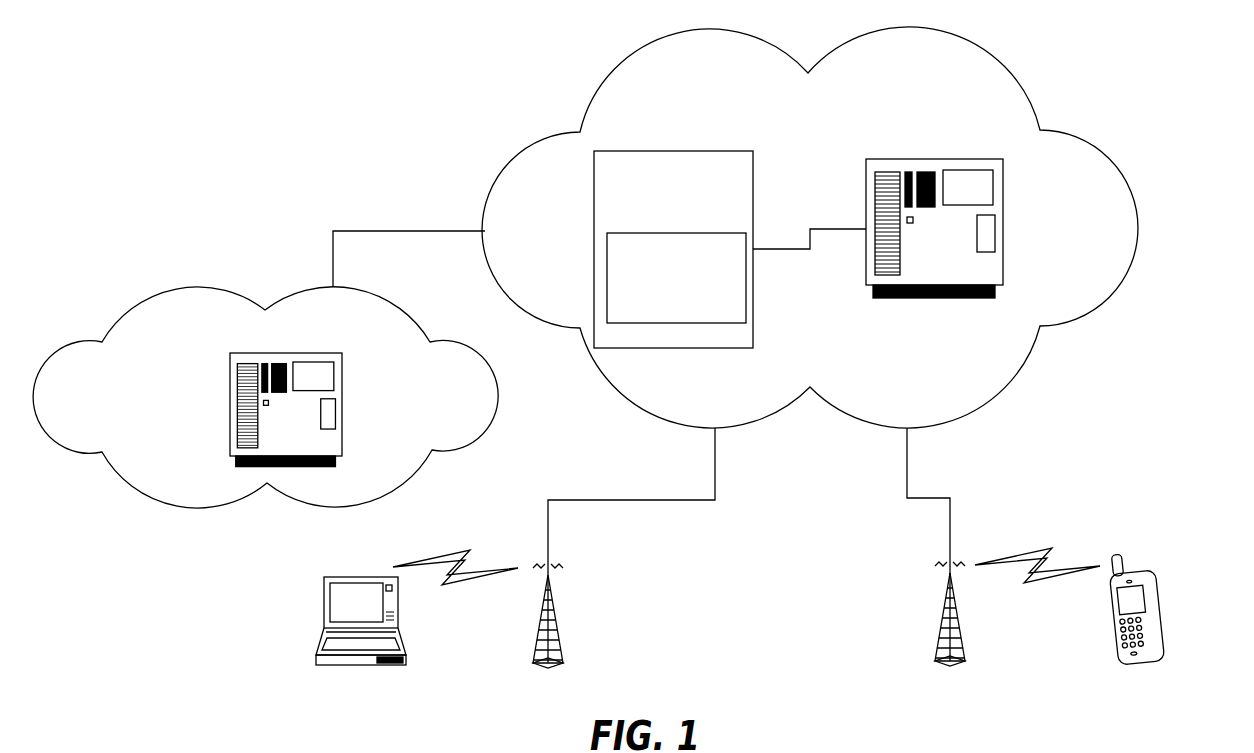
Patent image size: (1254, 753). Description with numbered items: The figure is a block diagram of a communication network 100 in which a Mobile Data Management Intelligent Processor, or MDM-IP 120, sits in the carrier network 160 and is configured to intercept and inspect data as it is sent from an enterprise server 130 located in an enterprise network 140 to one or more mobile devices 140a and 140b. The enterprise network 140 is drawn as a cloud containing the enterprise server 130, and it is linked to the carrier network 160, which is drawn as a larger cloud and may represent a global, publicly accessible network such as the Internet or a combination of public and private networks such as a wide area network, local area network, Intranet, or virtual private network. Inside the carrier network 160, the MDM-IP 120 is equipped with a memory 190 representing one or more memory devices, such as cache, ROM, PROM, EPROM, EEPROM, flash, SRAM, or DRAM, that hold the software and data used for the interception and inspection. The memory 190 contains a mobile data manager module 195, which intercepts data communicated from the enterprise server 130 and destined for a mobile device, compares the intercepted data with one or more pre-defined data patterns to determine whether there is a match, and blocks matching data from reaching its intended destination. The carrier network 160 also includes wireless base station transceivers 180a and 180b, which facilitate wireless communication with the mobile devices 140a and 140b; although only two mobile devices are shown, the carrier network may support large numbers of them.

The communication network 100 is at (163, 100).
The MDM-IP 120 is at (933, 159).
The enterprise server 130 is at (342, 405).
The enterprise network 140 is at (265, 397).
The mobile device 140a is at (325, 618).
The mobile device 140b is at (1158, 588).
The carrier network 160 is at (810, 227).
The wireless base station transceiver 180a is at (567, 650).
The wireless base station transceiver 180b is at (937, 647).
The memory 190 is at (673, 249).
The mobile data manager module 195 is at (676, 278).